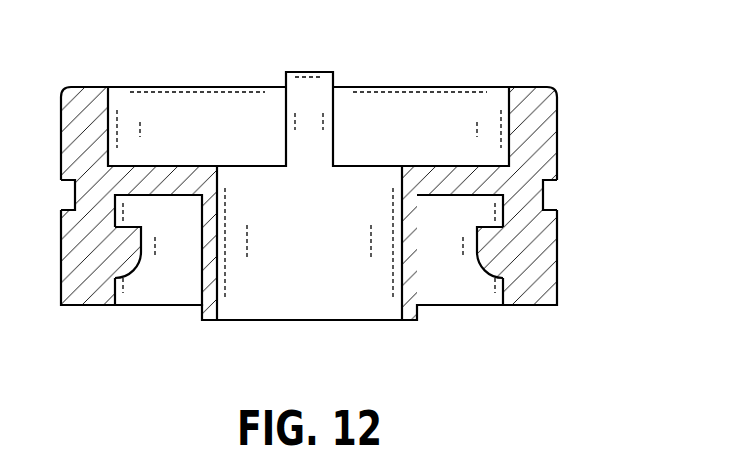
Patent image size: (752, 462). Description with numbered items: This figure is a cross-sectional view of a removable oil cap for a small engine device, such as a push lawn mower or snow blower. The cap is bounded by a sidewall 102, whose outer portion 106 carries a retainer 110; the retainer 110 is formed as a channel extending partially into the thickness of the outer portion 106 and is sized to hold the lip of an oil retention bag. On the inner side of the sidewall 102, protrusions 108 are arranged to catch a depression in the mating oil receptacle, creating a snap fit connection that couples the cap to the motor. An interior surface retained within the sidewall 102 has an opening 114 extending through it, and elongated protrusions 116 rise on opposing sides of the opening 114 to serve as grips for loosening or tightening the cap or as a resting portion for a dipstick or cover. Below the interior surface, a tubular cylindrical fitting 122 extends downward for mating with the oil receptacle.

The sidewall 102 is at (580, 245).
The outer portion 106 is at (547, 130).
The protrusions 108 is at (142, 275).
The retainer 110 is at (544, 198).
The opening 114 is at (308, 307).
The elongated protrusions 116 is at (310, 72).
The tubular cylindrical fitting 122 is at (208, 322).